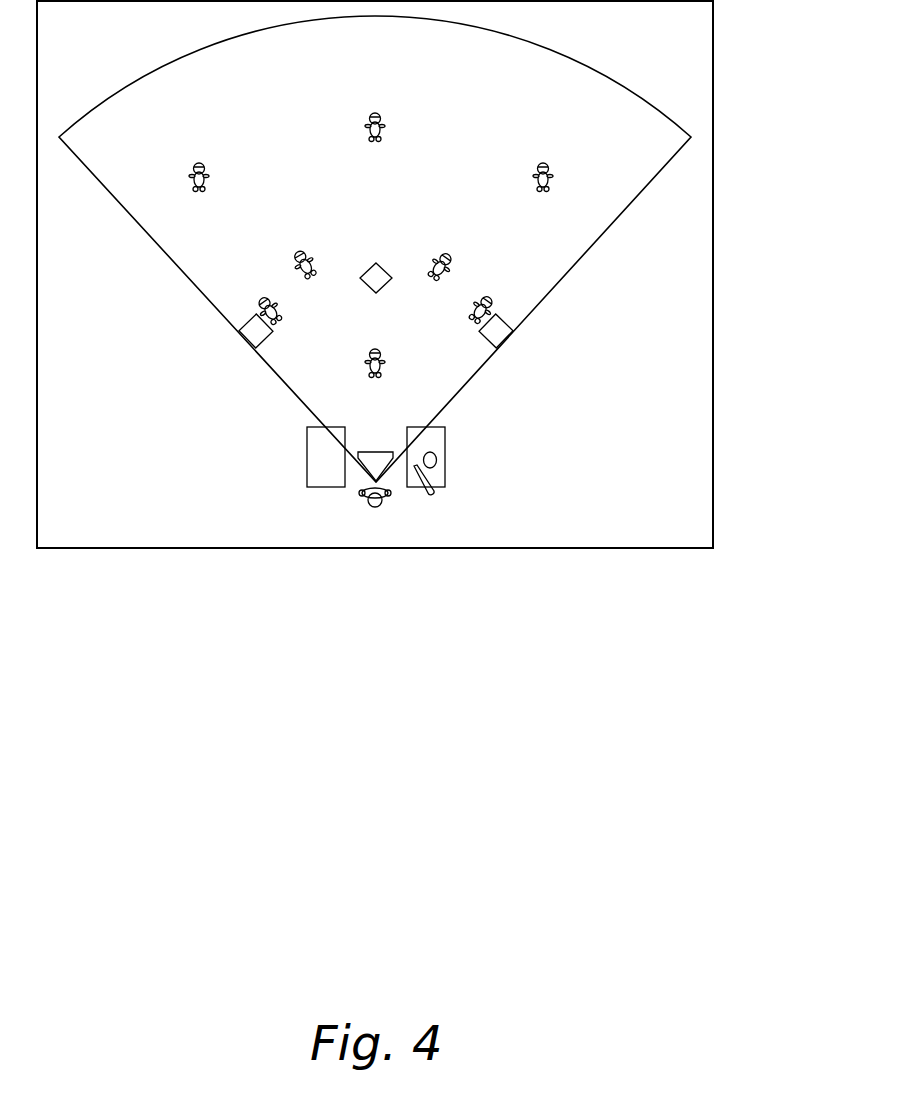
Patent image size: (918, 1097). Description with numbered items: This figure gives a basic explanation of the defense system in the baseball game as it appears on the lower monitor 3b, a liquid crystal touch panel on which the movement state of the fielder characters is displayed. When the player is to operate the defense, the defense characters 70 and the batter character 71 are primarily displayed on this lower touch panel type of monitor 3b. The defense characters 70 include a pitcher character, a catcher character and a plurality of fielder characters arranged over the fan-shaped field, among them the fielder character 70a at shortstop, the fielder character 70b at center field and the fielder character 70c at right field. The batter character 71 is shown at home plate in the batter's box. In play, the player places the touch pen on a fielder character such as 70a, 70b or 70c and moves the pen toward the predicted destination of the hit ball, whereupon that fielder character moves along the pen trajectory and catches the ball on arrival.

The lower monitor 3b is at (713, 152).
The defense characters 70 is at (567, 108).
The fielder character at shortstop 70a is at (302, 248).
The fielder character at center field 70b is at (378, 113).
The fielder character at right field 70c is at (548, 166).
The batter character 71 is at (455, 452).